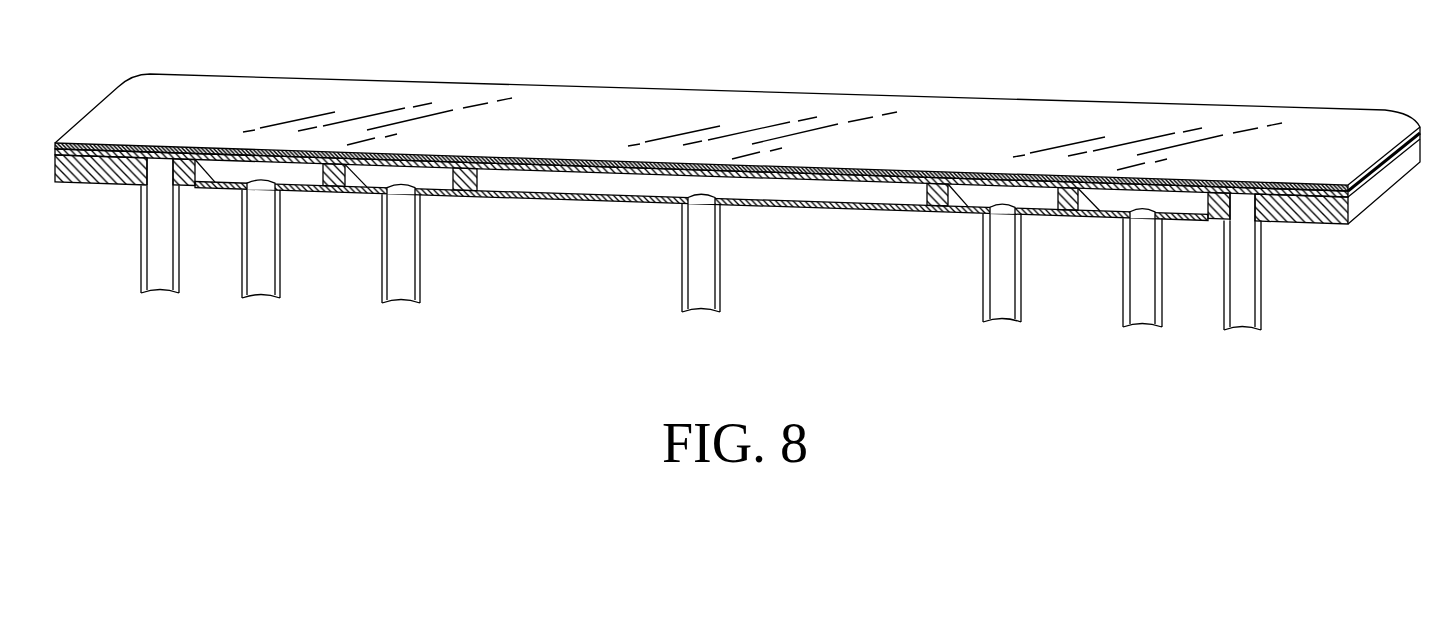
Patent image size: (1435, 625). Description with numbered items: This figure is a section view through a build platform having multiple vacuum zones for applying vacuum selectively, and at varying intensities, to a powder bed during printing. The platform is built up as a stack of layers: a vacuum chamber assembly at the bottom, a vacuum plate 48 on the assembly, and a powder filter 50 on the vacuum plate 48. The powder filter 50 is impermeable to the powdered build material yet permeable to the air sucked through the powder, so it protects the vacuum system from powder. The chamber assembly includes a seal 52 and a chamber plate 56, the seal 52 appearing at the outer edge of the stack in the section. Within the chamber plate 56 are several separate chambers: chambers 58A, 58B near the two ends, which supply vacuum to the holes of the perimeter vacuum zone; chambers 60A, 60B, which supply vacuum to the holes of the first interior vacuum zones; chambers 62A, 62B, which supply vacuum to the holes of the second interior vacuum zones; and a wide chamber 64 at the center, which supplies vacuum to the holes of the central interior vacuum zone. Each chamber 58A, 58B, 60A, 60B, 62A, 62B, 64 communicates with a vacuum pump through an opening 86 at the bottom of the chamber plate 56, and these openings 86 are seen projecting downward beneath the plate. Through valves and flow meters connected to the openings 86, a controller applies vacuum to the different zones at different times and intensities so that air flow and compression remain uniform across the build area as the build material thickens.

The powder filter 50 is at (285, 103).
The vacuum plate 48 is at (67, 158).
The chamber plate 56 is at (100, 175).
The seal 52 is at (137, 183).
The chamber 58A is at (166, 166).
The chamber 58B is at (1245, 197).
The chamber 60A is at (233, 166).
The chamber 60B is at (1177, 207).
The chamber 62A is at (428, 178).
The chamber 62B is at (983, 193).
The chamber 64 is at (548, 180).
The opening 86 is at (258, 186).